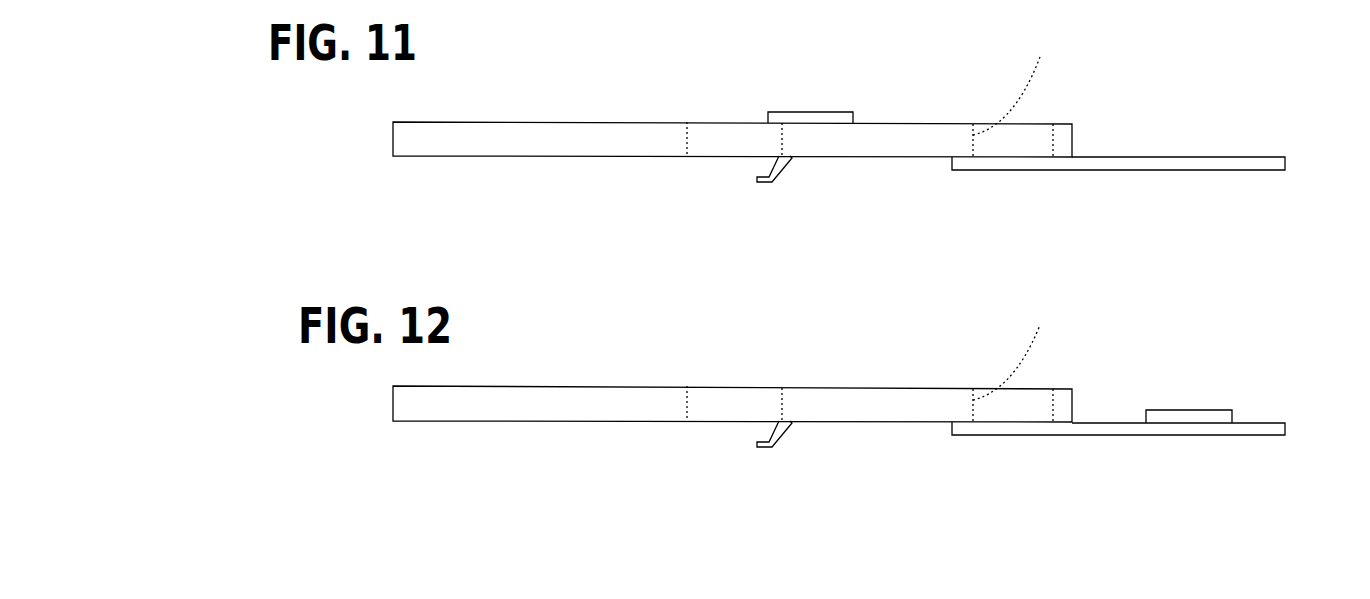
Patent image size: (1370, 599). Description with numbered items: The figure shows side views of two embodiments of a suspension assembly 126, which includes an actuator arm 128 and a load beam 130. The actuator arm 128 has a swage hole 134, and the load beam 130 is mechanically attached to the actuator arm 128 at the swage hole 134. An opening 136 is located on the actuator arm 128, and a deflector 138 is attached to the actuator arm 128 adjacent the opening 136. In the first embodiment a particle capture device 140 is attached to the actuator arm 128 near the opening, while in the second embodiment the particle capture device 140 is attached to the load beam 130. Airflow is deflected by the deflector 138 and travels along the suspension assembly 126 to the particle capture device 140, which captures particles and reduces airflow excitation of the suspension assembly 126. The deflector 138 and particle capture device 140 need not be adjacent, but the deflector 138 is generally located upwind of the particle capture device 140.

In FIG. 11, the suspension assembly 126 is at (923, 80).
In FIG. 12, the suspension assembly 126 is at (955, 316).
In FIG. 11, the actuator arm 128 is at (636, 138).
In FIG. 12, the actuator arm 128 is at (636, 403).
In FIG. 11, the load beam 130 is at (1170, 157).
In FIG. 12, the load beam 130 is at (1108, 435).
In FIG. 11, the swage hole 134 is at (1015, 94).
In FIG. 12, the swage hole 134 is at (1015, 360).
In FIG. 11, the opening 136 is at (718, 138).
In FIG. 12, the opening 136 is at (718, 403).
In FIG. 11, the deflector 138 is at (782, 173).
In FIG. 12, the deflector 138 is at (782, 438).
In FIG. 11, the particle capture device 140 is at (808, 112).
In FIG. 12, the particle capture device 140 is at (1170, 410).